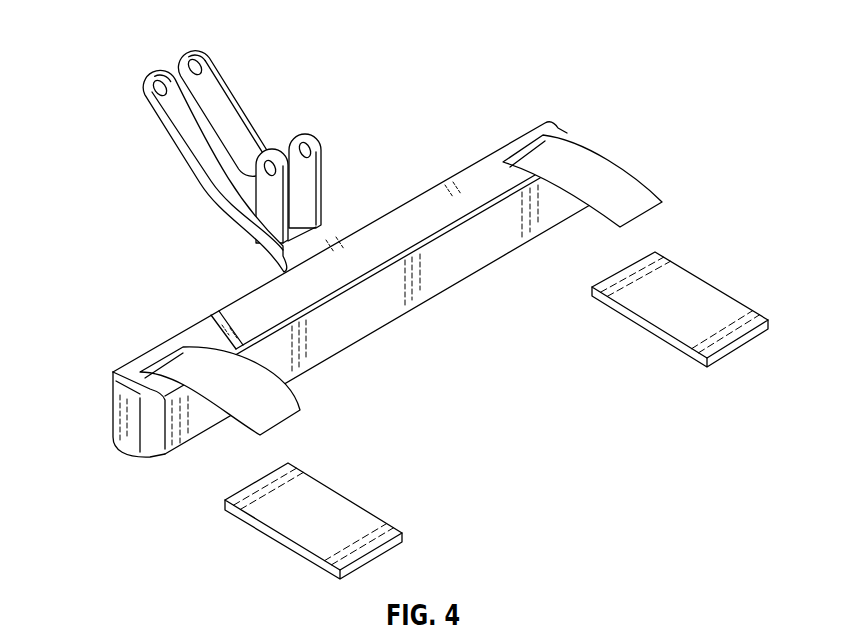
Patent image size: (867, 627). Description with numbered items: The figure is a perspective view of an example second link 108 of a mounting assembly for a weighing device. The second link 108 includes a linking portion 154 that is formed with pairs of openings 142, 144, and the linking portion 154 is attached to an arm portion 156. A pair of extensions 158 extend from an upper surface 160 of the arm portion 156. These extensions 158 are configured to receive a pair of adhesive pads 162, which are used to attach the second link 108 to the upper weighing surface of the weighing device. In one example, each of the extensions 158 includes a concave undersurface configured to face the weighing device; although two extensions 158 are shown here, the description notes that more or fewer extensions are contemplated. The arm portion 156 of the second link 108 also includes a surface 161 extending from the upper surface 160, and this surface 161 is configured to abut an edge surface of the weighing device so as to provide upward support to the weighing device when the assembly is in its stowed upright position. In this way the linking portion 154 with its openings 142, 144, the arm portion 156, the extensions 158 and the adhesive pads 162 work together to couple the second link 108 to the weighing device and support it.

The second link 108 is at (417, 305).
The openings 142 is at (182, 59).
The openings 144 is at (313, 160).
The linking portion 154 is at (320, 126).
The arm portion 156 is at (535, 118).
The extensions 158 is at (180, 362).
The upper surface 160 is at (247, 312).
The surface 161 is at (193, 427).
The adhesive pads 162 is at (715, 298).